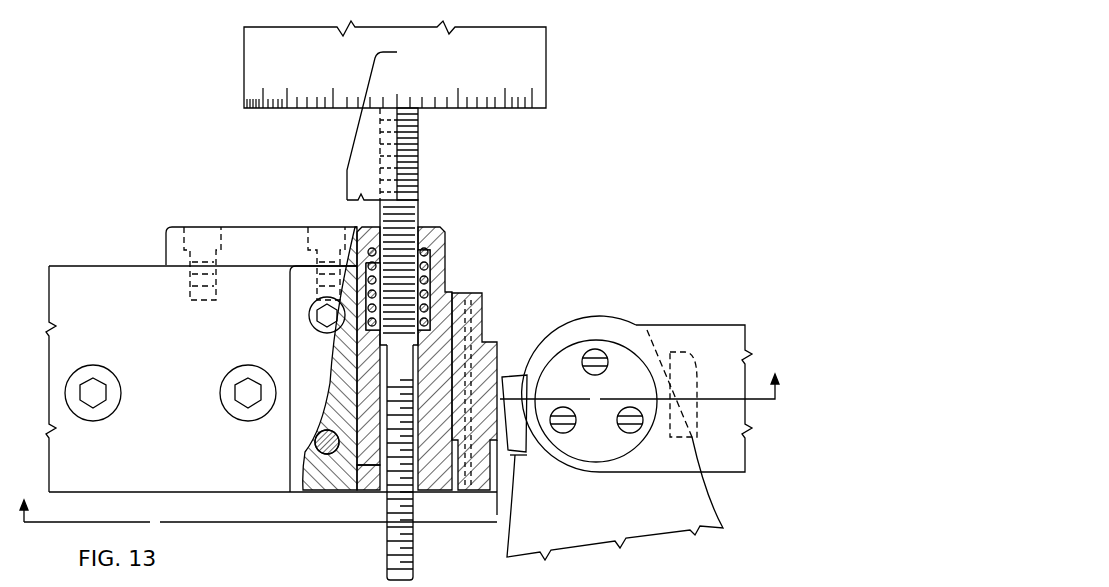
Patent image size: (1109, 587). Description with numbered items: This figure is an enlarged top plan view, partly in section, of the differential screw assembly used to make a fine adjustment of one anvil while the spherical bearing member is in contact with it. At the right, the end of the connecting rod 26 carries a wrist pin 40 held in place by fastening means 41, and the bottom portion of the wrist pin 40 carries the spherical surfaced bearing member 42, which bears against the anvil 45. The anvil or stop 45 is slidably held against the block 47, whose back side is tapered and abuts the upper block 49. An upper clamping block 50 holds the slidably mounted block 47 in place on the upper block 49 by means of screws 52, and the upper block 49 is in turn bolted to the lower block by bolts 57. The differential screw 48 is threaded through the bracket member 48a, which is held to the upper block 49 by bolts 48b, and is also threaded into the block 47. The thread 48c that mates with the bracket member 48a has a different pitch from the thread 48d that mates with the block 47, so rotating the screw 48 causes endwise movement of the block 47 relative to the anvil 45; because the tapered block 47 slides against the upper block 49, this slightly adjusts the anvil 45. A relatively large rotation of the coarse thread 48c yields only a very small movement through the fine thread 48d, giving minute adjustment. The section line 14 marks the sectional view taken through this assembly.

The section line 14- 14 is at (395, 438).
The connecting rod 26 is at (700, 326).
The wrist pin 40 is at (583, 455).
The fastening means 41 is at (633, 426).
The spherical surfaced bearing member 42 is at (508, 376).
The anvil 45 is at (484, 340).
The block 47 is at (352, 492).
The differential screw 48 is at (548, 72).
The bracket member 48a is at (440, 229).
The bolts 48b is at (214, 228).
The thread 48c is at (420, 156).
The thread 48d is at (414, 549).
The upper block 49 is at (70, 266).
The upper clamping block 50 is at (290, 352).
The screws 52 is at (308, 315).
The bolts 57 is at (116, 393).